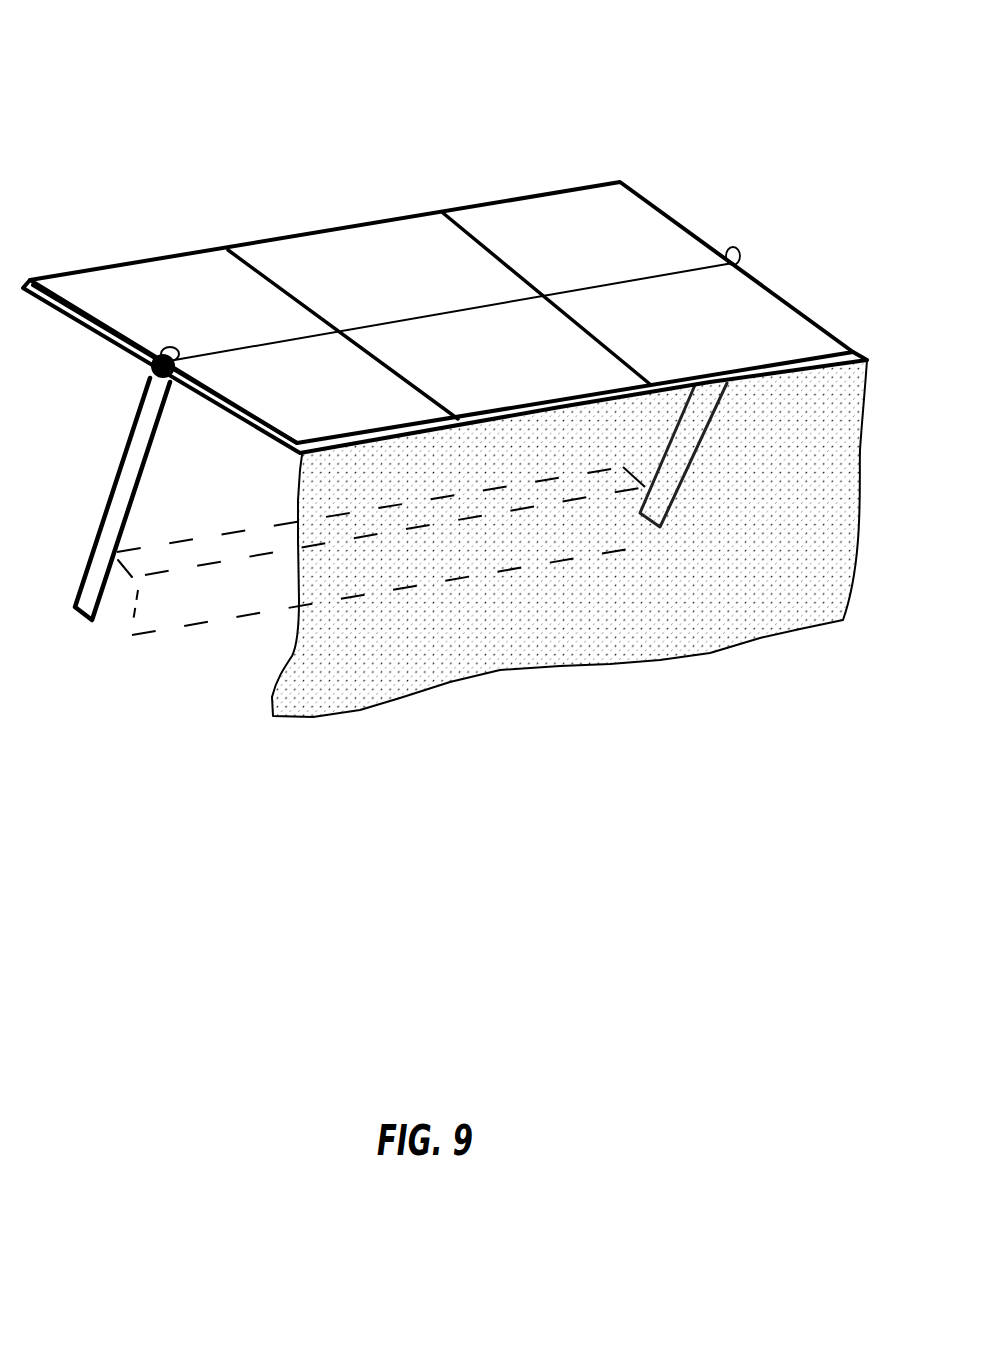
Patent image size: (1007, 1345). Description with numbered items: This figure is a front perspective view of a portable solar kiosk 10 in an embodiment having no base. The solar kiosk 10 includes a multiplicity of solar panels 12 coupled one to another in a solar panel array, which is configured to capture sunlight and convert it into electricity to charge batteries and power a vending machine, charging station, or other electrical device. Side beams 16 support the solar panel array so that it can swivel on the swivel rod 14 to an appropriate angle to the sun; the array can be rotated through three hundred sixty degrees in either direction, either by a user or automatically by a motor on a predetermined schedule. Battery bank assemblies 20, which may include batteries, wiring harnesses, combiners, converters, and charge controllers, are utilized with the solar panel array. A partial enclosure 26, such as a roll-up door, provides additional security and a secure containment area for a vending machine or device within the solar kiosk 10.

The solar kiosk 10 is at (559, 70).
The solar panels 12 is at (103, 278).
The swivel rod 14 is at (150, 367).
The side beams 16 is at (677, 457).
The battery bank assemblies 20 is at (237, 552).
The partial enclosure 26 is at (298, 661).